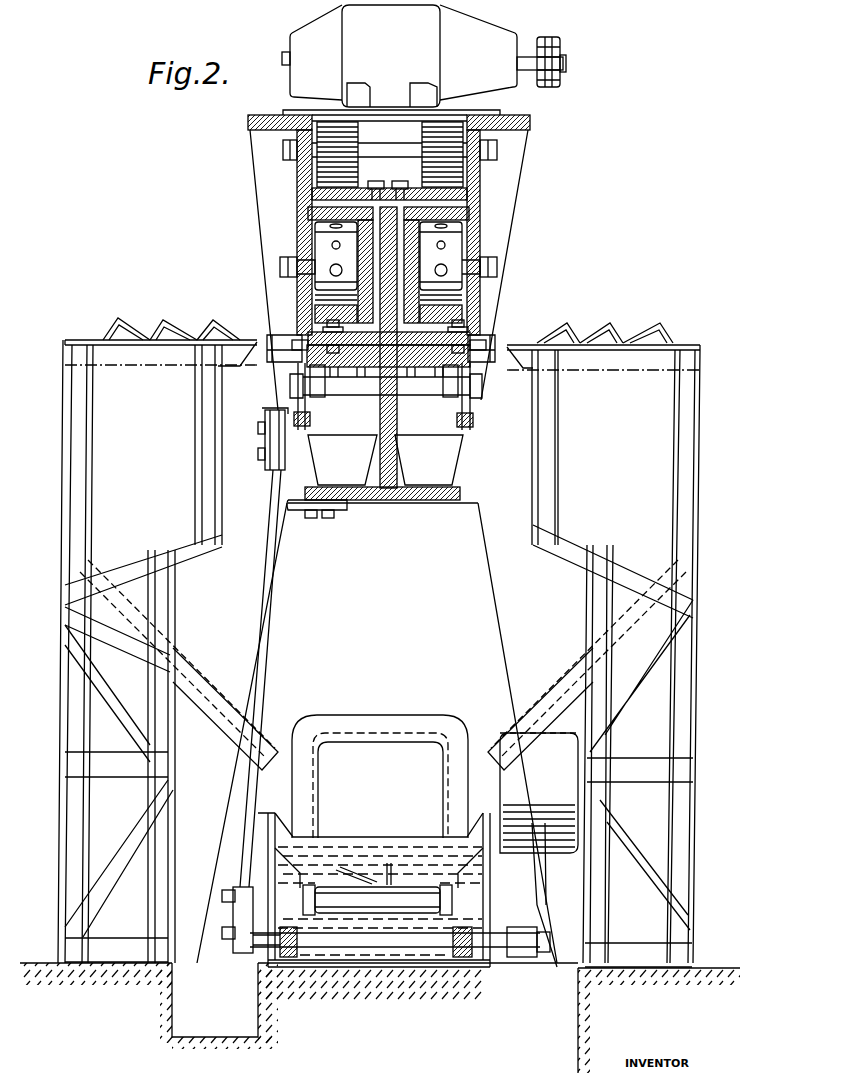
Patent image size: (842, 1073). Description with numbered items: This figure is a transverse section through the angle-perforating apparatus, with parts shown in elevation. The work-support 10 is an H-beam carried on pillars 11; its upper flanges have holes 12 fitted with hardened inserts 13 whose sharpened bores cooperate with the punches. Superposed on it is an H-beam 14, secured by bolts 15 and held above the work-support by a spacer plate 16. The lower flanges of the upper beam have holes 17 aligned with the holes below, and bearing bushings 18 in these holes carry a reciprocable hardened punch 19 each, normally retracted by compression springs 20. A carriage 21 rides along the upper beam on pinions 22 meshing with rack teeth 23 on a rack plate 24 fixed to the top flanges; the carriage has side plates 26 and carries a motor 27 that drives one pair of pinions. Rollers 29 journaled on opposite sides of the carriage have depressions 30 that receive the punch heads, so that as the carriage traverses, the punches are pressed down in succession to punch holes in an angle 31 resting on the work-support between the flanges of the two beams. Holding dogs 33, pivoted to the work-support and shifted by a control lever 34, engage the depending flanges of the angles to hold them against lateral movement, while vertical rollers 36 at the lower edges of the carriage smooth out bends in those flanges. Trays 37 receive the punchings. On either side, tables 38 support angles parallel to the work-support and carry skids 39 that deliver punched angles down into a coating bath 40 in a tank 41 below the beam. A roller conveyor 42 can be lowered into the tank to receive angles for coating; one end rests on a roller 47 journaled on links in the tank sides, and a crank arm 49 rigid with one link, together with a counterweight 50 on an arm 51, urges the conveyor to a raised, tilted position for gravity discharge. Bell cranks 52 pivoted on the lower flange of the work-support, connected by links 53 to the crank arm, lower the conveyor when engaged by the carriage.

The work-support 10 is at (385, 500).
The pillars 11 is at (480, 613).
The holes 12 is at (400, 373).
The hardened inserts 13 is at (320, 395).
The H-beam 14 is at (396, 347).
The bolts 15 is at (380, 378).
The spacer plate 16 is at (387, 271).
The holes 17 is at (465, 347).
The bearing bushings 18 is at (460, 337).
The punch 19 is at (462, 330).
The compression springs 20 is at (300, 327).
The carriage 21 is at (262, 120).
The pinions 22 is at (422, 146).
The rack teeth 23 is at (305, 188).
The rack plate 24 is at (388, 197).
The side plates 26 is at (300, 197).
The motor 27 is at (424, 60).
The rollers 29 is at (322, 252).
The depressions 30 is at (318, 298).
The angle 31 is at (300, 347).
The holding dogs 33 is at (298, 397).
The control lever 34 is at (310, 422).
The vertical rollers 36 is at (275, 360).
The trays 37 is at (385, 460).
The tables 38 is at (165, 360).
The skids 39 is at (197, 680).
The coating bath 40 is at (338, 853).
The tank 41 is at (487, 880).
The roller conveyor 42 is at (377, 889).
The roller 47 is at (288, 960).
The crank arm 49 is at (243, 957).
The counterweight 50 is at (539, 793).
The arm 51 is at (543, 877).
The bell cranks 52 is at (265, 412).
The links 53 is at (268, 487).